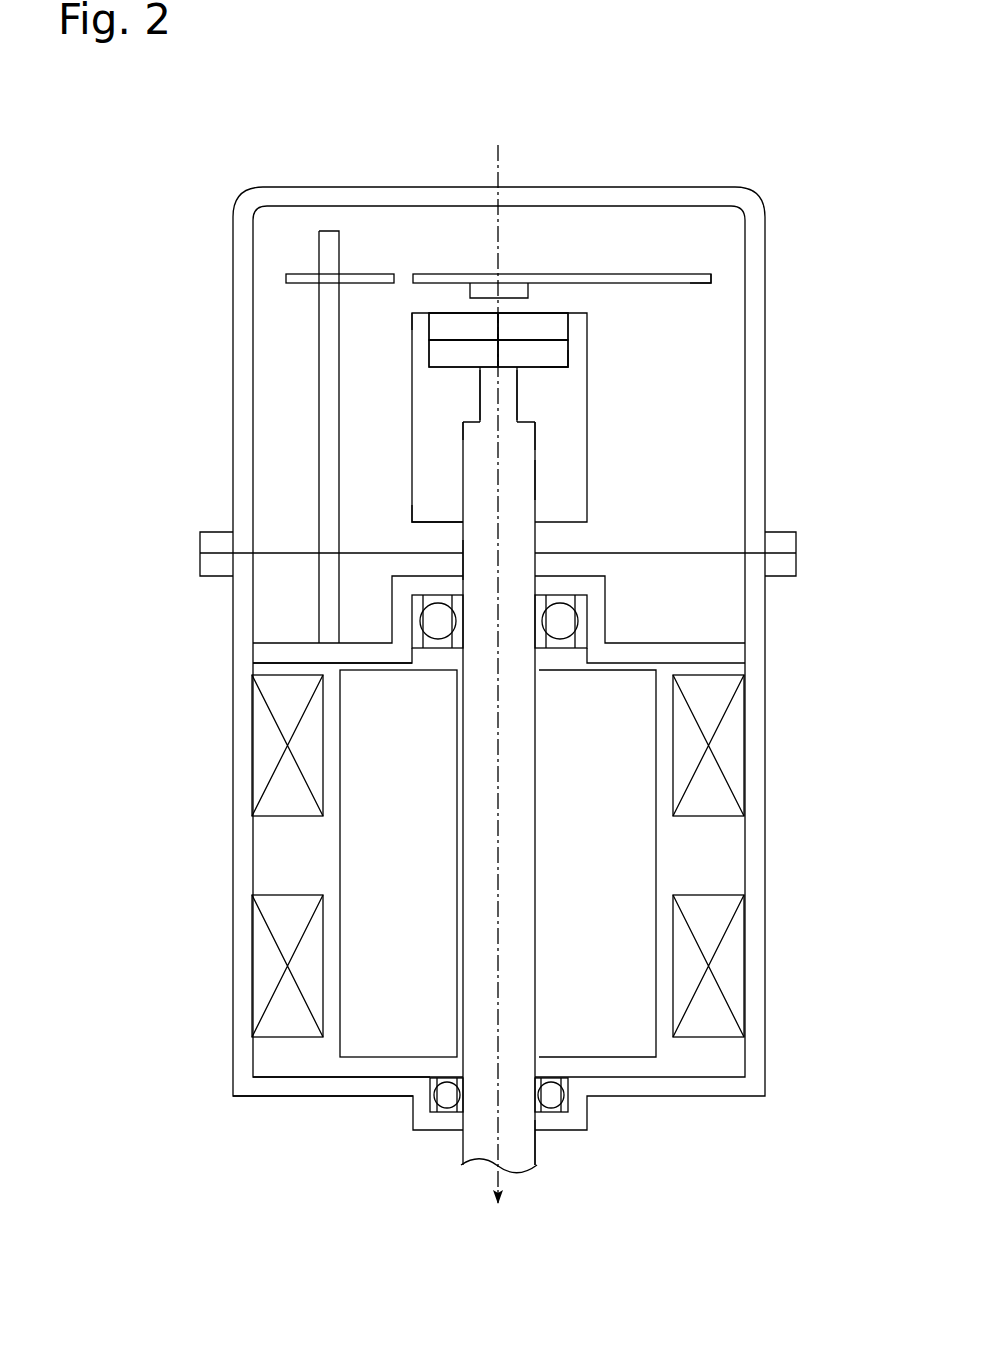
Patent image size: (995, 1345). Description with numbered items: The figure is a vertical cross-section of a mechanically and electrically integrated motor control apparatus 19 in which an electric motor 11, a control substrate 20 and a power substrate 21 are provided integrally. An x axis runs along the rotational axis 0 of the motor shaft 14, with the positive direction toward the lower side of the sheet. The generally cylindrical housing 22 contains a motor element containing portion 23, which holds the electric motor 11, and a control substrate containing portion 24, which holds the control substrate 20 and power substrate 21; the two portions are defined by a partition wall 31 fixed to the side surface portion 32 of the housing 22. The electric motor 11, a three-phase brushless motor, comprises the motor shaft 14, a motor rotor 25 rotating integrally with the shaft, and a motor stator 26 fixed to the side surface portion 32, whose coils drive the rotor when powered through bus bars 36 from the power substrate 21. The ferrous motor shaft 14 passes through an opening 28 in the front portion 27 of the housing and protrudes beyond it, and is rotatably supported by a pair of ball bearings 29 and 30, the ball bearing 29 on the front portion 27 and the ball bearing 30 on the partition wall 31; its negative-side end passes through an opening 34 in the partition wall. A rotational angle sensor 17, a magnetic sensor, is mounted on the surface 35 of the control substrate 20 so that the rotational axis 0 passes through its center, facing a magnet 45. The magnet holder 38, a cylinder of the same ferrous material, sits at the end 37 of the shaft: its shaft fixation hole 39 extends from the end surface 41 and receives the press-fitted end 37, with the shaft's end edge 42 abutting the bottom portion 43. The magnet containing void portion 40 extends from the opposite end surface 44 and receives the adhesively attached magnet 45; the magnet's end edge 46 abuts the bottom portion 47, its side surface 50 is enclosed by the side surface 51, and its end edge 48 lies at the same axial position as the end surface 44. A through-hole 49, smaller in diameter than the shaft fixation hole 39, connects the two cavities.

The rotational axis 0 is at (506, 148).
The electric motor 11 is at (683, 1056).
The motor shaft 14 is at (462, 1148).
The rotational angle sensor 17 is at (533, 292).
The motor control apparatus 19 is at (752, 183).
The control substrate 20 is at (640, 270).
The power substrate 21 is at (282, 278).
The housing 22 is at (236, 196).
The motor element containing portion 23 is at (284, 1052).
The control substrate containing portion 24 is at (718, 292).
The motor rotor 25 is at (378, 1047).
The motor stator 26 is at (265, 968).
The front portion 27 is at (312, 1086).
The opening 28 is at (535, 1140).
The ball bearing 29 is at (562, 1105).
The ball bearing 30 is at (582, 600).
The partition wall 31 is at (720, 640).
The side surface portion 32 is at (245, 748).
The opening 34 is at (478, 566).
The surface 35 is at (693, 285).
The bus bar 36 is at (318, 505).
The end 37 is at (525, 440).
The magnet holder 38 is at (595, 420).
The shaft fixation hole 39 is at (527, 462).
The magnet containing void portion 40 is at (460, 306).
The end surface 41 is at (432, 520).
The end edge 42 is at (484, 410).
The bottom portion 43 is at (464, 430).
The end surface 44 is at (420, 320).
The magnet 45 is at (440, 322).
The end edge 46 is at (545, 370).
The bottom portion 47 is at (560, 360).
The end edge 48 is at (553, 314).
The through-hole 49 is at (484, 376).
The side surface 50 is at (437, 337).
The side surface 51 is at (578, 326).